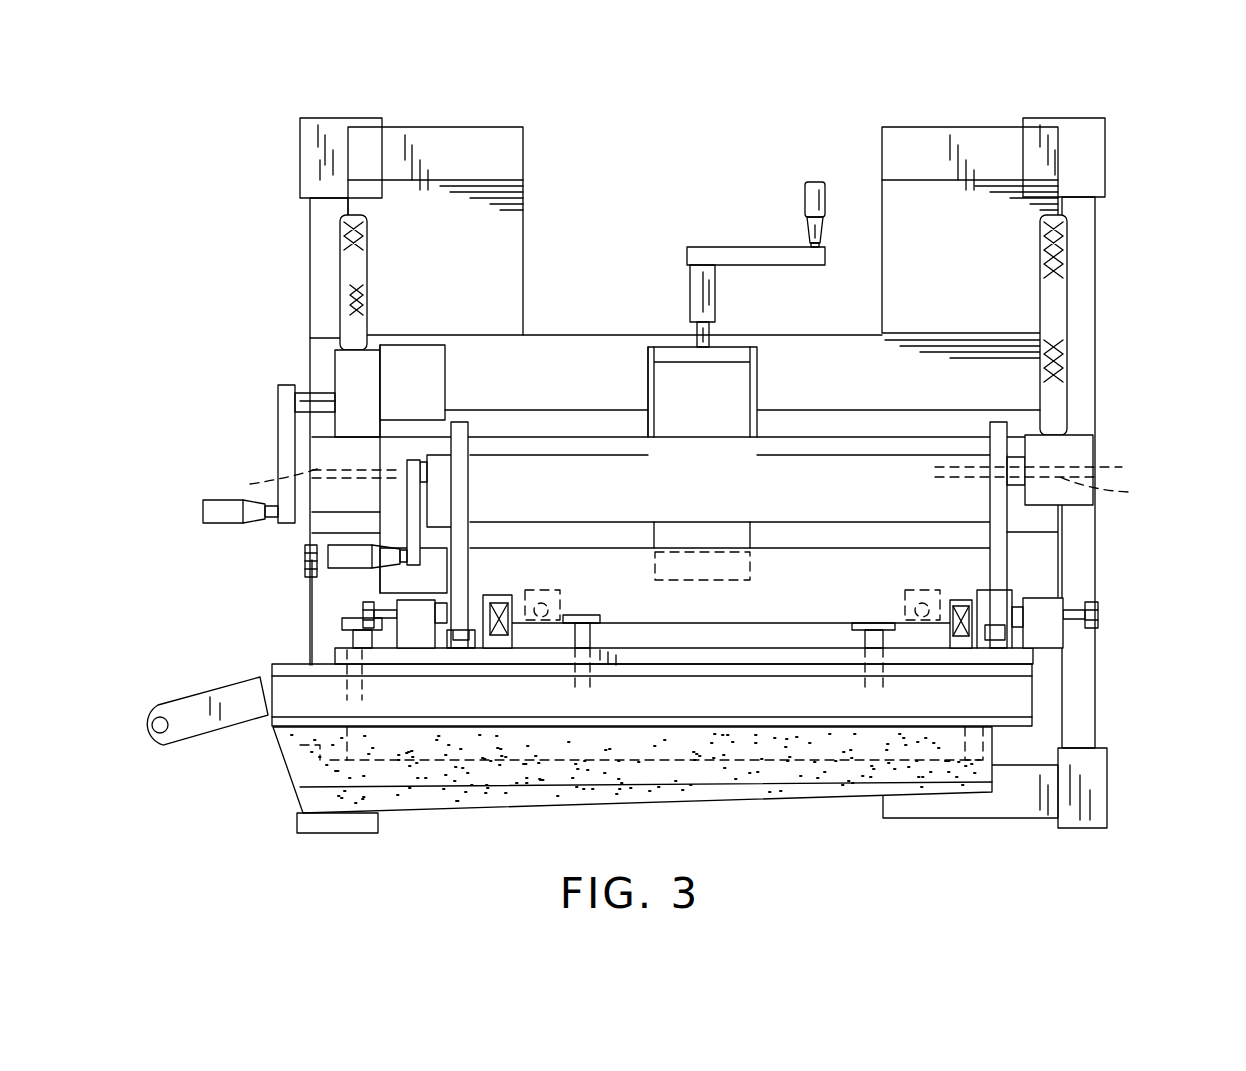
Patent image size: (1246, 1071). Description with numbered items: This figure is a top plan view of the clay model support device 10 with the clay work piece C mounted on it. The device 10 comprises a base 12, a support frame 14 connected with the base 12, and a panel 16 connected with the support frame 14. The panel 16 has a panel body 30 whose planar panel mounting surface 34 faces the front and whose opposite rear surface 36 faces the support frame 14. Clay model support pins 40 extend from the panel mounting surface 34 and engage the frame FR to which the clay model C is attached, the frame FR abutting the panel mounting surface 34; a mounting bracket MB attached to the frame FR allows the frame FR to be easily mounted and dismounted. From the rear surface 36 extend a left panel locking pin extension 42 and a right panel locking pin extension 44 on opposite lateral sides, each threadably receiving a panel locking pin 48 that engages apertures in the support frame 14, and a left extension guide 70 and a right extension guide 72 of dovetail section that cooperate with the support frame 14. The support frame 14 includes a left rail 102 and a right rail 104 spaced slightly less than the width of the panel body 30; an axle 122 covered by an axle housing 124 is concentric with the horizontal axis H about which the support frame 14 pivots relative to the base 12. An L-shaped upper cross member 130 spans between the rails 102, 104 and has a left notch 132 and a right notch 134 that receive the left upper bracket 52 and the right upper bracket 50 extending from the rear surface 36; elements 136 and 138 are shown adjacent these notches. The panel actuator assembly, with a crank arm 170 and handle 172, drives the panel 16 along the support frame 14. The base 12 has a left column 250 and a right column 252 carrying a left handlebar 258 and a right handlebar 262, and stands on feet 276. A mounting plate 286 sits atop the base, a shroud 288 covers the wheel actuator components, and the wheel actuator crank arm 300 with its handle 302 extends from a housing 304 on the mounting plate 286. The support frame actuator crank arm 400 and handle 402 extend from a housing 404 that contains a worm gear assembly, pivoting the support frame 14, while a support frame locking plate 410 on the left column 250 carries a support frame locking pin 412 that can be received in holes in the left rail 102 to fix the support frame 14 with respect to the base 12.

The clay model support device 10 is at (1183, 228).
The base 12 is at (1104, 321).
The support frame 14 is at (1020, 550).
The panel 16 is at (330, 657).
The panel body 30 is at (1057, 655).
The panel mounting surface 34 is at (790, 668).
The rear surface 36 is at (763, 648).
The clay model support pin 40 is at (360, 685).
The left panel locking pin extension 42 is at (416, 630).
The right panel locking pin extension 44 is at (1050, 633).
The panel locking pin 48 is at (365, 612).
The right upper bracket 50 is at (501, 642).
The left upper bracket 52 is at (962, 640).
The left extension guide 70 is at (470, 648).
The right extension guide 72 is at (993, 637).
The left rail 102 is at (465, 545).
The right rail 104 is at (1000, 533).
The axle 122 is at (688, 487).
The axle housing 124 is at (818, 445).
The upper cross member 130 is at (777, 560).
The left notch 132 is at (497, 597).
The right notch 134 is at (978, 597).
The roller 136 is at (560, 590).
The roller 138 is at (905, 590).
The crank arm 170 is at (415, 500).
The handle 172 is at (350, 565).
The left column 250 is at (320, 448).
The right column 252 is at (1085, 445).
The left handlebar 258 is at (352, 262).
The right handlebar 262 is at (1058, 298).
The feet 276 is at (300, 145).
The mounting plate 286 is at (645, 372).
The shroud 288 is at (508, 235).
The crank arm 300 is at (755, 255).
The handle 302 is at (805, 195).
The housing 304 is at (725, 375).
The crank arm 400 is at (285, 462).
The handle 402 is at (225, 510).
The housing 404 is at (345, 365).
The support frame locking plate 410 is at (432, 380).
The support frame locking pin 412 is at (305, 560).
The clay work piece C is at (755, 805).
The horizontal axis H is at (1122, 468).
The mounting bracket MB is at (190, 727).
The frame FR is at (1025, 693).